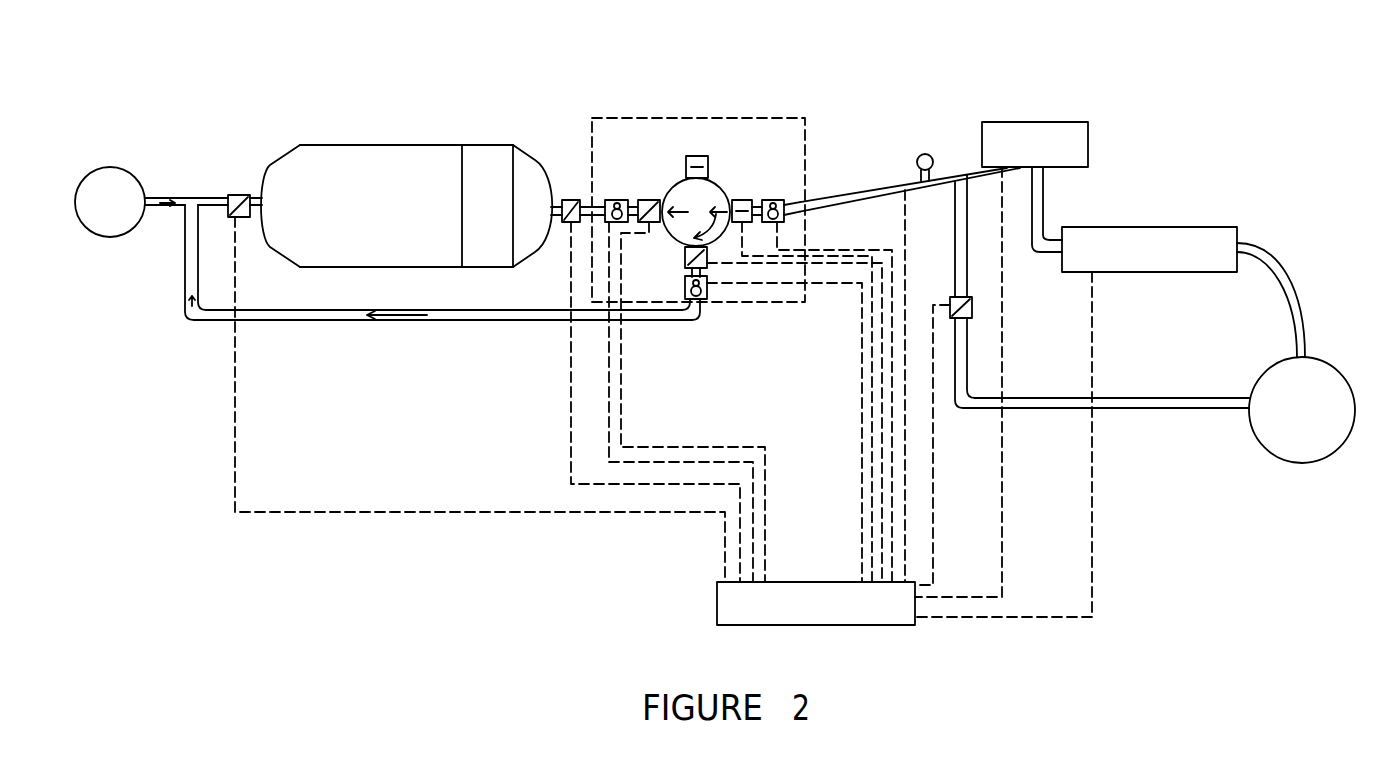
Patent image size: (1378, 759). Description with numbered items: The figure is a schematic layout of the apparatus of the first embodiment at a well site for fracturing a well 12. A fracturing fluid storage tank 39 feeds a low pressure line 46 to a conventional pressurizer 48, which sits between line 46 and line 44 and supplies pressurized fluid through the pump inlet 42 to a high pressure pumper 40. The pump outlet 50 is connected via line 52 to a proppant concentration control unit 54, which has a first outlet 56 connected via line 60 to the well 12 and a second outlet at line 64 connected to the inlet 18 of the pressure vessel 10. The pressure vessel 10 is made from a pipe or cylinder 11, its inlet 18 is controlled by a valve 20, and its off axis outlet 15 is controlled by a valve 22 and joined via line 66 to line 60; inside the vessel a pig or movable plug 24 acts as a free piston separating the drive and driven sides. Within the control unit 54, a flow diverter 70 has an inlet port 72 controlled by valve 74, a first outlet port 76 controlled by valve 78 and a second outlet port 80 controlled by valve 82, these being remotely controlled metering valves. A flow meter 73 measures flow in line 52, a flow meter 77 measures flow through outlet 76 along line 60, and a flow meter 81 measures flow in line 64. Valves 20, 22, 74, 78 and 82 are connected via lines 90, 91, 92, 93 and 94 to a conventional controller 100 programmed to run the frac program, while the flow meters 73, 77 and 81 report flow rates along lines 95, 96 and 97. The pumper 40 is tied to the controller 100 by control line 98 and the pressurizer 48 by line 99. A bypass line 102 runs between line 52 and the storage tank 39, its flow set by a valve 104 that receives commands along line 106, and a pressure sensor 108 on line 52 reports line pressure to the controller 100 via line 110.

The pressure vessel 10 is at (364, 134).
The pipe or cylinder 11 is at (322, 268).
The well 12 is at (123, 168).
The off axis outlet 15 is at (258, 197).
The inlet 18 is at (552, 185).
The valve 20 is at (566, 222).
The valve 22 is at (240, 218).
The pig or movable plug 24 is at (480, 262).
The fracturing fluid storage tank 39 is at (1298, 465).
The high pressure pumper 40 is at (1088, 128).
The pump inlet 42 is at (1072, 168).
The line 44 is at (1050, 211).
The low pressure line 46 is at (1290, 280).
The pressurizer 48 is at (1220, 228).
The pump outlet 50 is at (1023, 168).
The line 52 is at (885, 195).
The proppant concentration control unit 54 is at (792, 118).
The first outlet 56 is at (696, 318).
The line 60 is at (500, 322).
The outlet line 64 is at (590, 205).
The line 66 is at (218, 198).
The flow diverter 70 is at (722, 186).
The inlet port 72 is at (741, 200).
The flow meter 73 is at (779, 199).
The valve 74 is at (790, 203).
The first outlet port 76 is at (685, 257).
The flow meter 77 is at (688, 306).
The valve 78 is at (685, 287).
The second outlet port 80 is at (686, 165).
The flow meter 81 is at (611, 200).
The valve 82 is at (646, 199).
The line 90 is at (570, 485).
The line 91 is at (390, 512).
The line 92 is at (882, 422).
The line 93 is at (813, 263).
The line 94 is at (620, 415).
The line 95 is at (892, 458).
The line 96 is at (862, 373).
The line 97 is at (608, 380).
The control line 98 is at (1002, 510).
The line 99 is at (1092, 510).
The controller 100 is at (850, 625).
The bypass line 102 is at (990, 410).
The valve 104 is at (972, 306).
The line 106 is at (933, 545).
The pressure sensor 108 is at (927, 154).
The line 110 is at (905, 235).